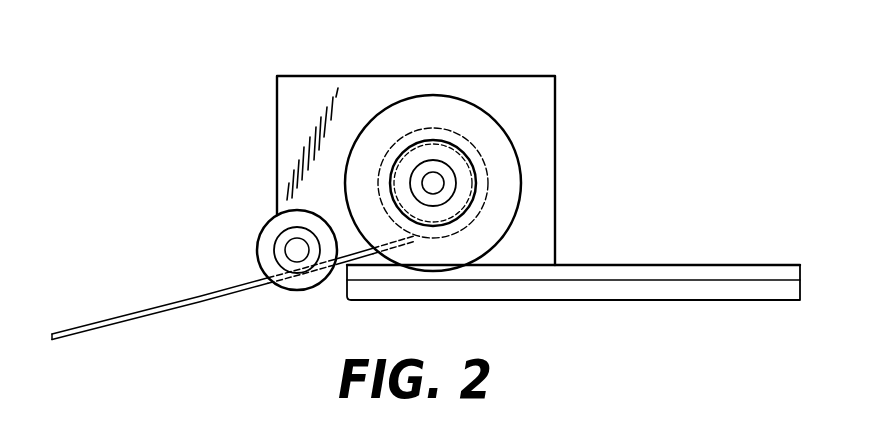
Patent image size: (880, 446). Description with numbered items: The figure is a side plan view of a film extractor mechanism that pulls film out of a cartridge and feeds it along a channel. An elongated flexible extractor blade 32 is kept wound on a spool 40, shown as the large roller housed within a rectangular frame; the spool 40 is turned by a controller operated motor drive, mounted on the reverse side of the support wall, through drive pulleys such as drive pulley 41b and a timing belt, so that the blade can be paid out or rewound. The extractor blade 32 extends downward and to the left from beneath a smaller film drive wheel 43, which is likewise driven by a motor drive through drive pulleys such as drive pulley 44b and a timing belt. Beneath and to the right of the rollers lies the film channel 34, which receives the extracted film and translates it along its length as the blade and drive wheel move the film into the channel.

The extractor blade 32 is at (177, 300).
The film channel 34 is at (704, 265).
The spool 40 is at (432, 96).
The drive pulley 41b is at (466, 160).
The film drive wheel 43 is at (271, 218).
The drive pulley 44b is at (268, 253).